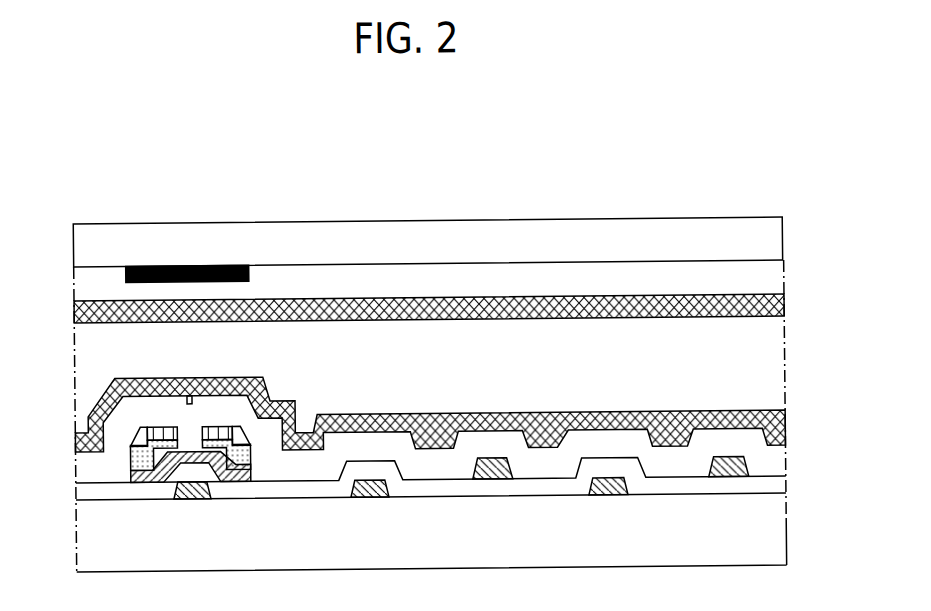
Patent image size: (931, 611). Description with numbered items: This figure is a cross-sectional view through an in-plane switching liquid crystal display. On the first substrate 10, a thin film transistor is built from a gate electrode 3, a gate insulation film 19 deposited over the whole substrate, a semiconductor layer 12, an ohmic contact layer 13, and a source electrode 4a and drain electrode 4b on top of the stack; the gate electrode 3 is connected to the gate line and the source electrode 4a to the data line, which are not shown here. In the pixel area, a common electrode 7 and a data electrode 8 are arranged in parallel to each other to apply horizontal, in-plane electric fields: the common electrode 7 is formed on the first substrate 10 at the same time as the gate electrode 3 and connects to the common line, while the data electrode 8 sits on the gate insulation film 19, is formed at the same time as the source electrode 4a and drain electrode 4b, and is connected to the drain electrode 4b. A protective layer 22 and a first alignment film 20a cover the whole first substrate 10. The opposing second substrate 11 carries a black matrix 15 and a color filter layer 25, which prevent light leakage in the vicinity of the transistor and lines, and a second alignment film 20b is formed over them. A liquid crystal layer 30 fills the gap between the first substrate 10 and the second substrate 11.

The second substrate 11 is at (784, 247).
The black matrix 15 is at (203, 266).
The color filter layer 25 is at (784, 284).
The second alignment film 20b is at (784, 314).
The liquid crystal layer 30 is at (165, 346).
The protective layer 22 is at (465, 405).
The first alignment film 20a is at (785, 431).
The source electrode 4a is at (164, 428).
The drain electrode 4b is at (224, 428).
The ohmic contact layer 13 is at (142, 472).
The semiconductor layer 12 is at (245, 472).
The gate electrode 3 is at (203, 500).
The common electrode 7 is at (380, 500).
The data electrode 8 is at (497, 482).
The gate insulation film 19 is at (780, 491).
The first substrate 10 is at (781, 538).